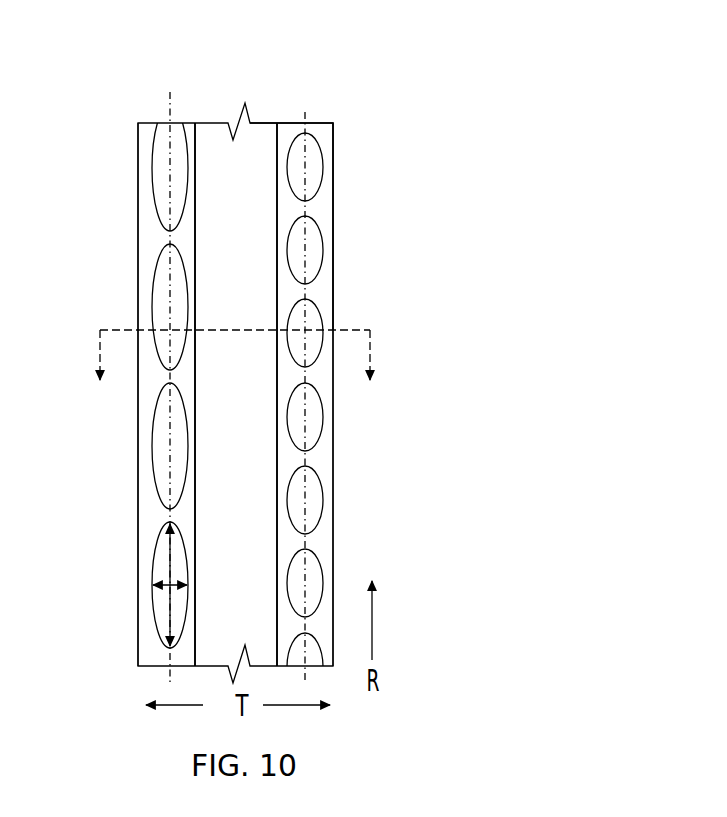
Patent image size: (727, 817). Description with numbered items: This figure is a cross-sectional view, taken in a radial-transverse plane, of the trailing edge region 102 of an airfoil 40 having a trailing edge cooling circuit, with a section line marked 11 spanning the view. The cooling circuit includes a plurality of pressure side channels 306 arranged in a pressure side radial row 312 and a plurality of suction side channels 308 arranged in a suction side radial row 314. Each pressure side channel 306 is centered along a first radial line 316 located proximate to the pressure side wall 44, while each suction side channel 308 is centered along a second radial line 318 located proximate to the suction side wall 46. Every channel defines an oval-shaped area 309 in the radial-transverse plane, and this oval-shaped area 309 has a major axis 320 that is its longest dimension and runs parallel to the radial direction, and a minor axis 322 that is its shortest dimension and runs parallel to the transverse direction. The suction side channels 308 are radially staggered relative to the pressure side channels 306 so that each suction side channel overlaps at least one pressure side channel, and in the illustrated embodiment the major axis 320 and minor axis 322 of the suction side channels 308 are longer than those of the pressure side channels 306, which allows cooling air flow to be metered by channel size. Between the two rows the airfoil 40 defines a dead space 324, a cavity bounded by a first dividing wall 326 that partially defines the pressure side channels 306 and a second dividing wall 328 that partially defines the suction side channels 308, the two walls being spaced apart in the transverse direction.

The airfoil 40 is at (349, 69).
The trailing edge region 102 is at (377, 114).
The pressure side radial row 312 is at (289, 108).
The suction side radial row 314 is at (177, 110).
The first radial line 316 is at (306, 166).
The oval-shaped area 309 is at (157, 564).
The suction side channels 308 is at (167, 169).
The pressure side channels 306 is at (309, 422).
The dead space 324 is at (252, 292).
The second dividing wall 328 is at (196, 421).
The first dividing wall 326 is at (276, 548).
The second radial line 318 is at (153, 450).
The pressure side wall 44 is at (334, 443).
The suction side wall 46 is at (138, 518).
The minor axis 322 is at (152, 578).
The major axis 320 is at (153, 620).
The section line 11- 11 is at (235, 365).